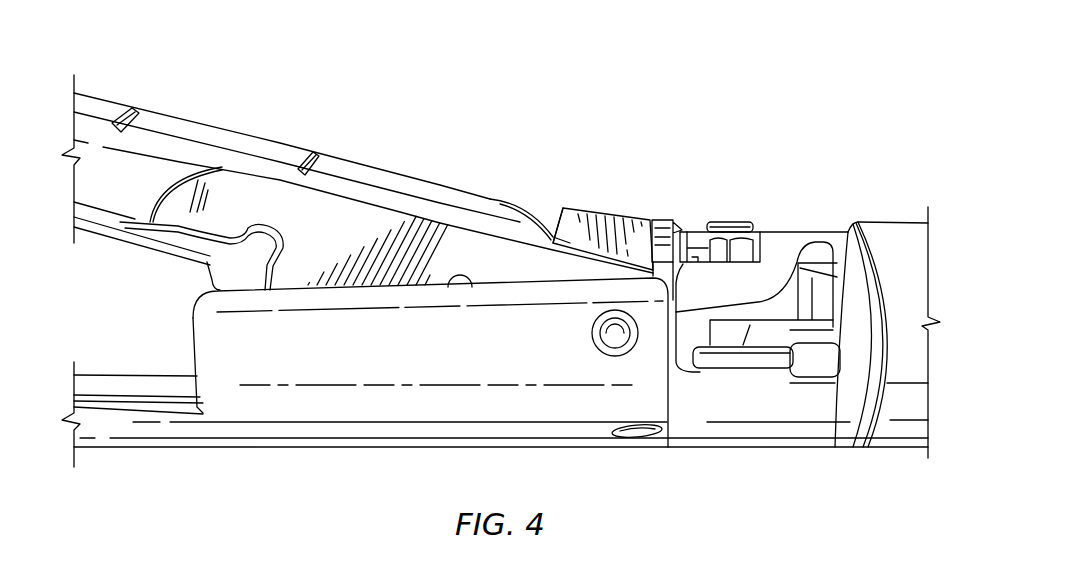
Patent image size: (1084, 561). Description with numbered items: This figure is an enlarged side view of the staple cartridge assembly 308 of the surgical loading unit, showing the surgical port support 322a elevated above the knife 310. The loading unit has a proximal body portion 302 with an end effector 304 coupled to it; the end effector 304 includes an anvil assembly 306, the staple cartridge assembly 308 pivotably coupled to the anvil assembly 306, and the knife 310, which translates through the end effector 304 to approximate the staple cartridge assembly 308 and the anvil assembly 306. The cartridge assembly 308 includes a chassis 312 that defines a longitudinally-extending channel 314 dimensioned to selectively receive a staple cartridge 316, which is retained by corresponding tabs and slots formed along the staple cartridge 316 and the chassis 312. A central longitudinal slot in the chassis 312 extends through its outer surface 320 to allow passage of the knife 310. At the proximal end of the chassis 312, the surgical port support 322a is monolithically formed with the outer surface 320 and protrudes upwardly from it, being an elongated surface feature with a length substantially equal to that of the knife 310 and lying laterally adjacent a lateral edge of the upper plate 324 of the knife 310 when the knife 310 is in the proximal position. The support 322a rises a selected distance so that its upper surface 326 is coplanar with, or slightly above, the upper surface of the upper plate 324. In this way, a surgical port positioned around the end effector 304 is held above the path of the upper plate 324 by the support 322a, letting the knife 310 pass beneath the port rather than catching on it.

The proximal body portion 302 is at (878, 220).
The end effector 304 is at (445, 100).
The anvil assembly 306 is at (240, 453).
The staple cartridge assembly 308 is at (320, 148).
The knife 310 is at (660, 217).
The chassis 312 is at (263, 187).
The longitudinally-extending channel 314 is at (141, 239).
The staple cartridge 316 is at (193, 247).
The outer surface 320 is at (470, 210).
The surgical port support 322a is at (587, 205).
The upper plate 324 is at (672, 226).
The upper surface 326 is at (608, 210).